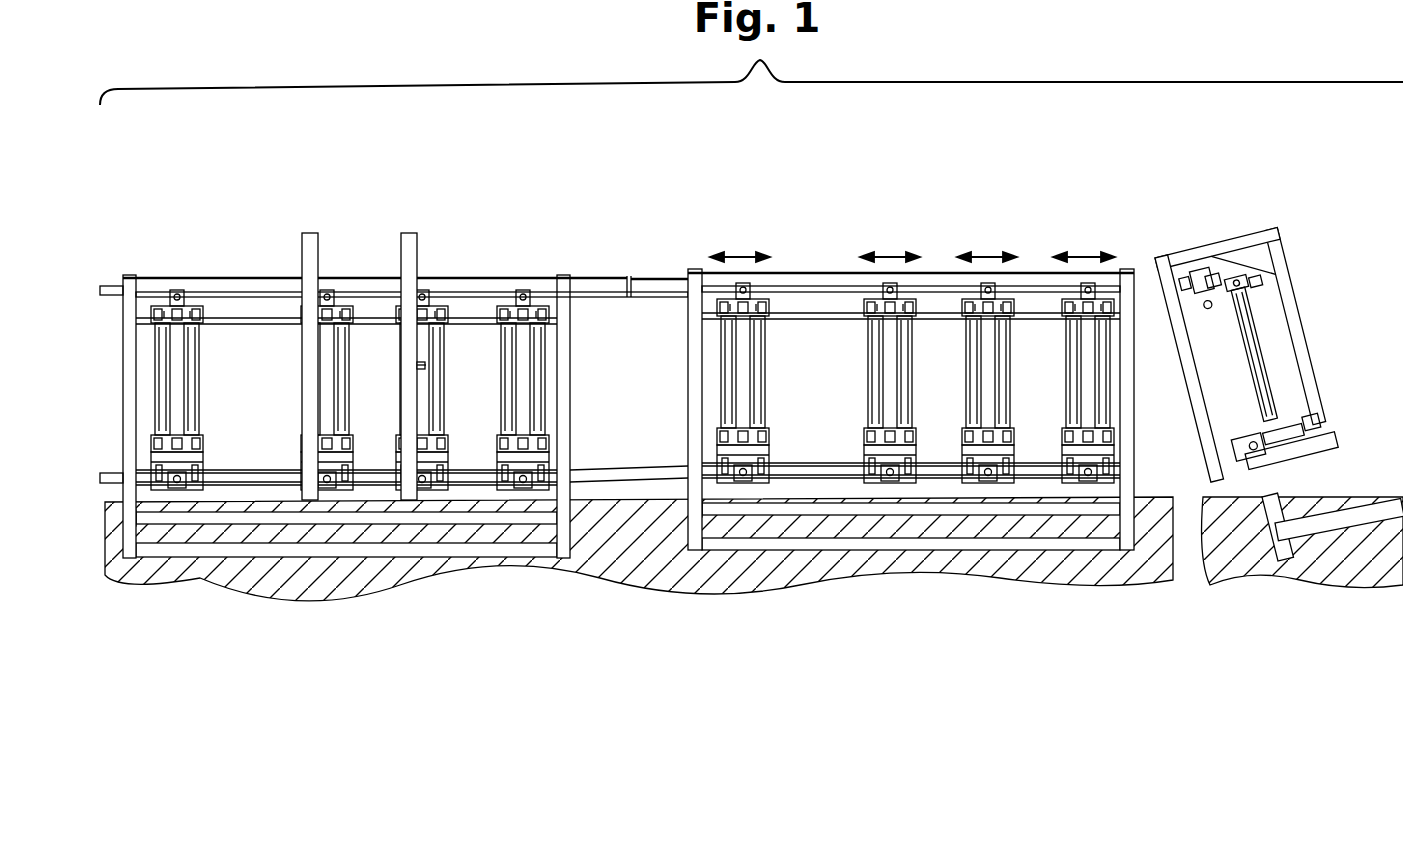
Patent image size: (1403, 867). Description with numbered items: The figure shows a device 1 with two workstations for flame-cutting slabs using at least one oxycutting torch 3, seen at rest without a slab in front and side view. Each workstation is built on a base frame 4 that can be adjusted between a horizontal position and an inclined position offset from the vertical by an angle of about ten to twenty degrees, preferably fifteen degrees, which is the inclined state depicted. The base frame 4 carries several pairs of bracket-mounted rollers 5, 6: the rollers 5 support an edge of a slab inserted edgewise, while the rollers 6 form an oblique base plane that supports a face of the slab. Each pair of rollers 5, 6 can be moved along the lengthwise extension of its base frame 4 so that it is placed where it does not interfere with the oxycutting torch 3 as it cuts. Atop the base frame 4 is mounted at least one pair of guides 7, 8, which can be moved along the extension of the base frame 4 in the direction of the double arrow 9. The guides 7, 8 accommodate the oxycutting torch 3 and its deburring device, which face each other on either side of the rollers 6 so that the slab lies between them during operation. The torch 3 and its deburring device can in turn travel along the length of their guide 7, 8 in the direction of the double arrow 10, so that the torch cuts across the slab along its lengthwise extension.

The device 1 is at (620, 632).
The oxycutting torch 3 is at (418, 366).
The base frame 4 is at (498, 545).
The rollers 5 is at (1308, 415).
The rollers 6 is at (182, 383).
The guide 7 is at (303, 248).
The guide 8 is at (1200, 420).
The double arrow 9 is at (185, 200).
The double arrow 10 is at (458, 348).